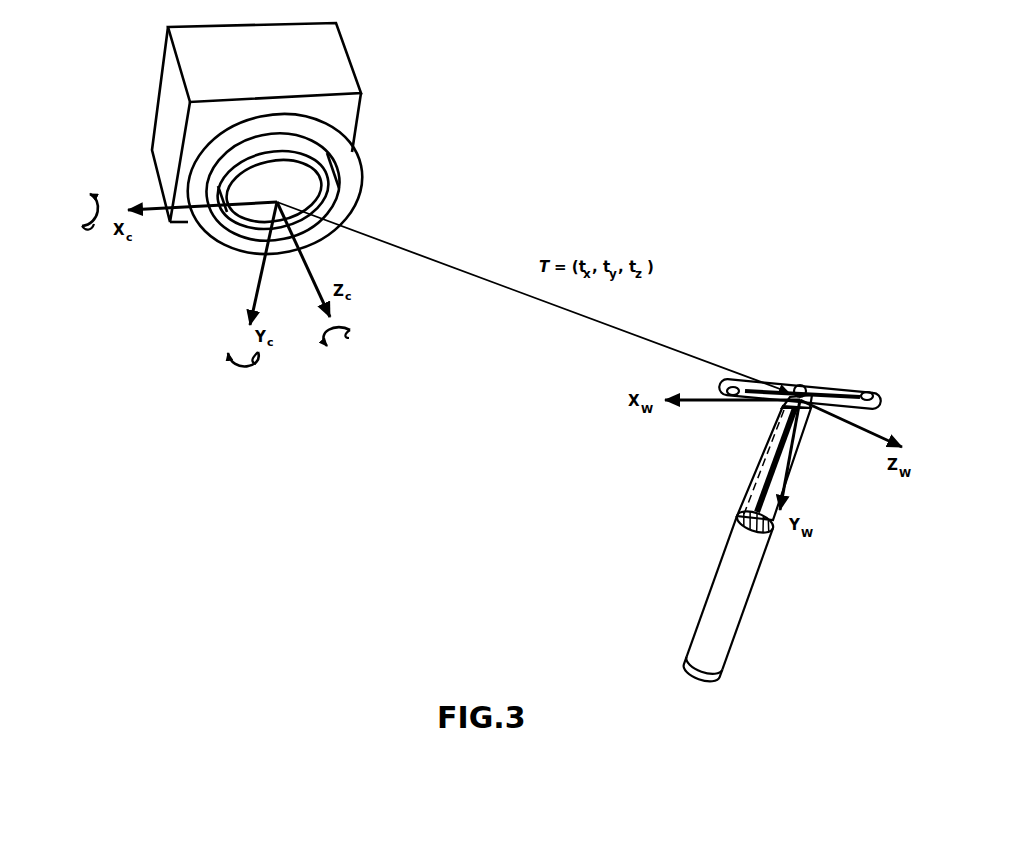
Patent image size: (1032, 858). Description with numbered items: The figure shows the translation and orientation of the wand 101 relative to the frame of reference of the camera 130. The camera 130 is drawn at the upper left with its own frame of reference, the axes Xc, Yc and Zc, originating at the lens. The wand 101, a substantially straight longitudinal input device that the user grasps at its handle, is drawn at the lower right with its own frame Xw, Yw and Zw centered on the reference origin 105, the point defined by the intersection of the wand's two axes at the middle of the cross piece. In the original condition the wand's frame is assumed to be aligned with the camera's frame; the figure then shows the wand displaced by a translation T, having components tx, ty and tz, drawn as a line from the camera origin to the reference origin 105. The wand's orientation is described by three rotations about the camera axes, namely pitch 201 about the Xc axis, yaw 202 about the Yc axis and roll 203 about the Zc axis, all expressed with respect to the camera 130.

The camera 130 is at (338, 54).
The pitch 201 is at (84, 234).
The yaw 202 is at (238, 370).
The roll 203 is at (352, 330).
The reference origin 105 is at (790, 388).
The wand 101 is at (696, 596).